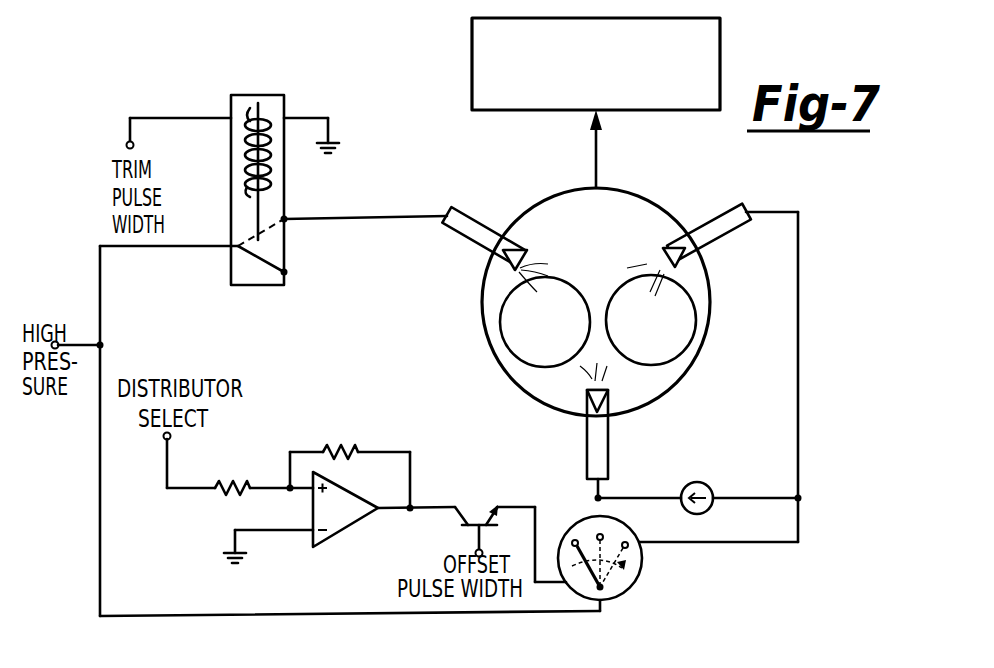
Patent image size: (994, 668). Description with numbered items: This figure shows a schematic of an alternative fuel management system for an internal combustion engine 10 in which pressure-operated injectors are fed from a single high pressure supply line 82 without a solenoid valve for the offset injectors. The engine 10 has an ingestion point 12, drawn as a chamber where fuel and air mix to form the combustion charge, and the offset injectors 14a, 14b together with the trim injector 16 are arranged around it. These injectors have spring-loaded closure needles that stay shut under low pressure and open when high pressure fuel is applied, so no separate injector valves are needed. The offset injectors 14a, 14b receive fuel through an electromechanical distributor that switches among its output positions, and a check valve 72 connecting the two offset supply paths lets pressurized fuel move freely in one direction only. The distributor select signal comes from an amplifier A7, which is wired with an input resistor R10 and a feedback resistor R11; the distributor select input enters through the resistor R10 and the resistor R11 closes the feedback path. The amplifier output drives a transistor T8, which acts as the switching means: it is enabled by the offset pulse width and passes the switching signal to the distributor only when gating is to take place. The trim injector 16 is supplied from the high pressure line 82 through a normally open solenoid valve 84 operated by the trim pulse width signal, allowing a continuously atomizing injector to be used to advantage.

The internal combustion engine 10 is at (720, 58).
The ingestion point 12 is at (636, 193).
The offset injector 14a is at (718, 216).
The offset injector 14b is at (609, 437).
The trim injector 16 is at (463, 238).
The check valve 72 is at (706, 484).
The high pressure supply line 82 is at (605, 600).
The normally open solenoid valve 84 is at (247, 97).
The resistor R10 is at (229, 492).
The resistor R11 is at (341, 450).
The amplifier A7 is at (347, 524).
The transistor T8 is at (467, 508).